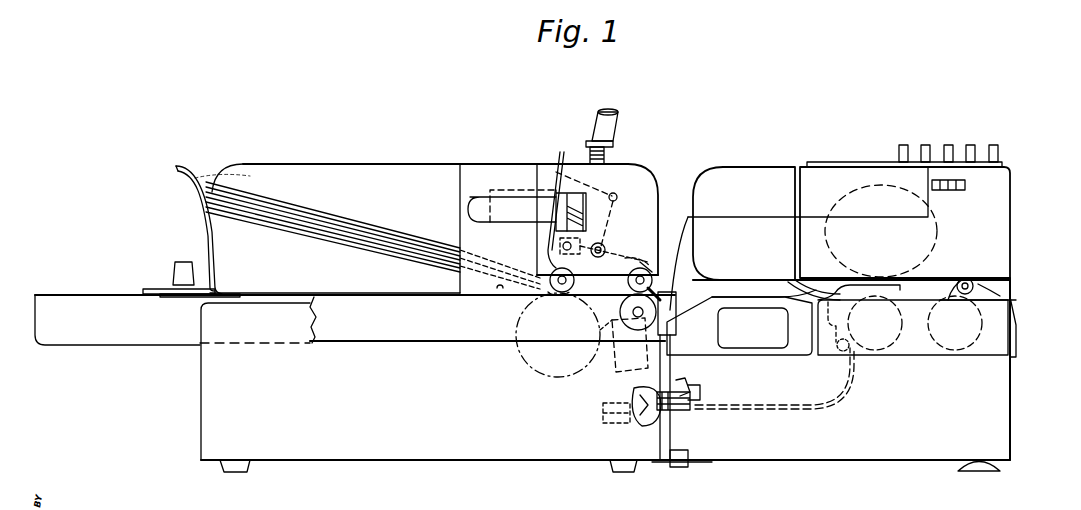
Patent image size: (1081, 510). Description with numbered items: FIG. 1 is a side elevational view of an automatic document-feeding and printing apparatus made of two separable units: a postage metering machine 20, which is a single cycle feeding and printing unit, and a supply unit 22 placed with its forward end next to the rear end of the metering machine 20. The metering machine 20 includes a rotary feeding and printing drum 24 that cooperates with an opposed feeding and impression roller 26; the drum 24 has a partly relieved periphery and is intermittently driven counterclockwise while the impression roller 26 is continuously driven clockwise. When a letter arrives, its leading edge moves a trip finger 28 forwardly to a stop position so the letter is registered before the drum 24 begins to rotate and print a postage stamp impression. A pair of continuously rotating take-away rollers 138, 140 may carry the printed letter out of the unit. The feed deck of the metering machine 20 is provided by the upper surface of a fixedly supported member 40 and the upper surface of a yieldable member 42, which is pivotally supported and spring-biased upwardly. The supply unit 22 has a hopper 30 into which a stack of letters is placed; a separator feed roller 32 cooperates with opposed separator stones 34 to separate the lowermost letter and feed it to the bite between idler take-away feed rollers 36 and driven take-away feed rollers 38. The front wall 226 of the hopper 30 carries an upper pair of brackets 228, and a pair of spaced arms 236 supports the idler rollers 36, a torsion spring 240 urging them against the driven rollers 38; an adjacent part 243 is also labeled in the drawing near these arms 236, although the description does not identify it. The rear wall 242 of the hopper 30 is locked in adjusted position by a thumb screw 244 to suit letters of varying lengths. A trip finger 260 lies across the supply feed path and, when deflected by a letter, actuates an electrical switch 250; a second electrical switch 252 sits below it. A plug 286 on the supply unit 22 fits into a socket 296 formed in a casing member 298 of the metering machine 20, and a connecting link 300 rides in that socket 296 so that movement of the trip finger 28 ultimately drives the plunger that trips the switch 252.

The postage metering machine 20 is at (823, 138).
The supply unit 22 is at (384, 148).
The rotary feeding and printing drum 24 is at (938, 234).
The feeding and impression roller 26 is at (888, 352).
The trip finger 28 is at (842, 285).
The hopper 30 is at (296, 176).
The separator feed roller 32 is at (514, 330).
The separator stones 34 is at (580, 284).
The idler take-away feed rollers 36 is at (666, 243).
The driven take-away feed rollers 38 is at (662, 320).
The fixedly supported member 40 is at (415, 325).
The yieldable member 42 is at (936, 352).
The take-away roller 138 is at (985, 268).
The take-away roller 140 is at (1010, 298).
The front wall 226 is at (553, 188).
The upper pair of brackets 228 is at (610, 194).
The spaced arms 236 is at (648, 258).
The torsion spring 240 is at (604, 238).
The pin 243 is at (606, 249).
The rear wall 242 is at (214, 254).
The thumb screw 244 is at (174, 270).
The electrical switch 250 is at (625, 368).
The electrical switch 252 is at (632, 420).
The trip finger 260 is at (656, 294).
The plug 286 is at (692, 403).
The socket 296 is at (695, 390).
The casing member 298 is at (678, 386).
The connecting link 300 is at (775, 408).